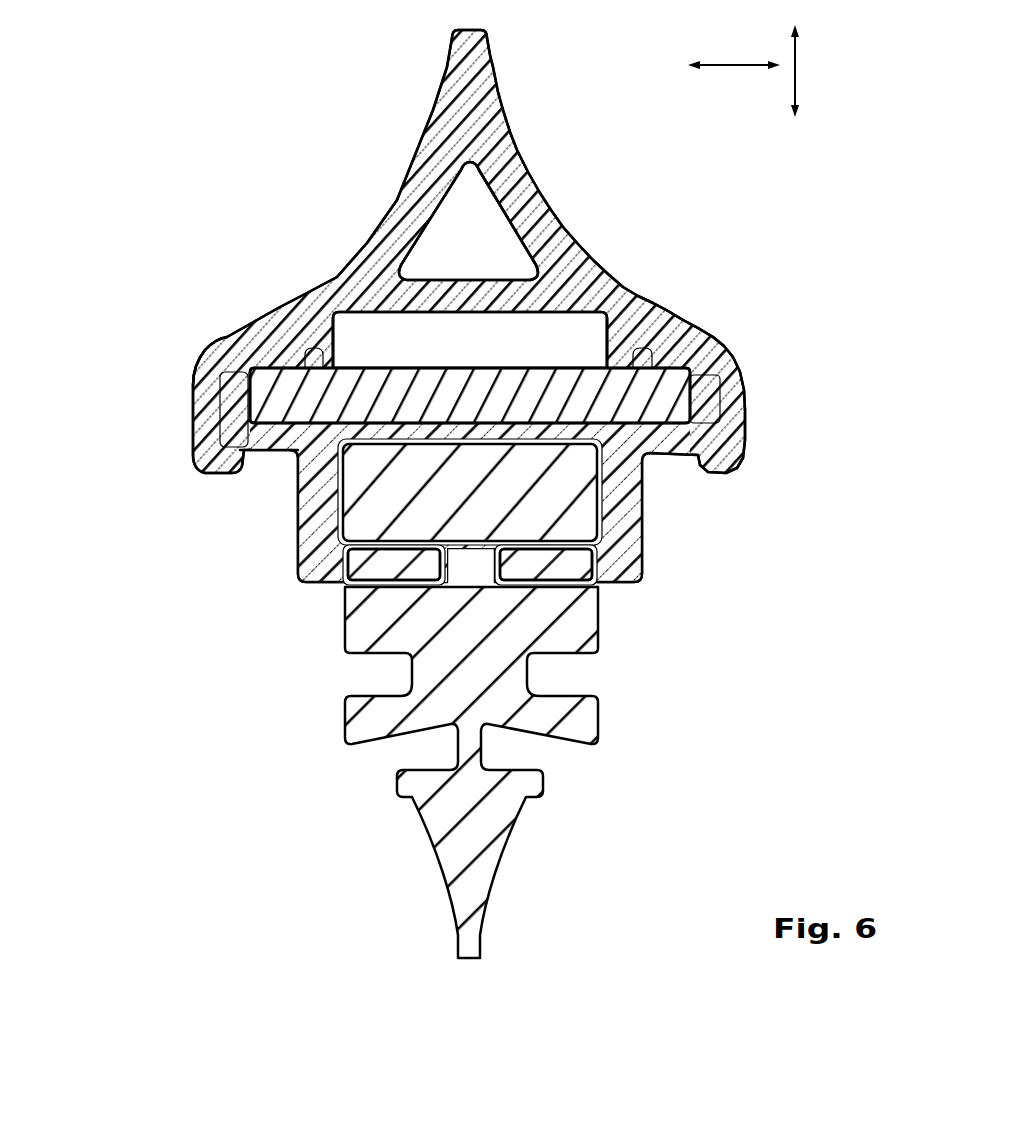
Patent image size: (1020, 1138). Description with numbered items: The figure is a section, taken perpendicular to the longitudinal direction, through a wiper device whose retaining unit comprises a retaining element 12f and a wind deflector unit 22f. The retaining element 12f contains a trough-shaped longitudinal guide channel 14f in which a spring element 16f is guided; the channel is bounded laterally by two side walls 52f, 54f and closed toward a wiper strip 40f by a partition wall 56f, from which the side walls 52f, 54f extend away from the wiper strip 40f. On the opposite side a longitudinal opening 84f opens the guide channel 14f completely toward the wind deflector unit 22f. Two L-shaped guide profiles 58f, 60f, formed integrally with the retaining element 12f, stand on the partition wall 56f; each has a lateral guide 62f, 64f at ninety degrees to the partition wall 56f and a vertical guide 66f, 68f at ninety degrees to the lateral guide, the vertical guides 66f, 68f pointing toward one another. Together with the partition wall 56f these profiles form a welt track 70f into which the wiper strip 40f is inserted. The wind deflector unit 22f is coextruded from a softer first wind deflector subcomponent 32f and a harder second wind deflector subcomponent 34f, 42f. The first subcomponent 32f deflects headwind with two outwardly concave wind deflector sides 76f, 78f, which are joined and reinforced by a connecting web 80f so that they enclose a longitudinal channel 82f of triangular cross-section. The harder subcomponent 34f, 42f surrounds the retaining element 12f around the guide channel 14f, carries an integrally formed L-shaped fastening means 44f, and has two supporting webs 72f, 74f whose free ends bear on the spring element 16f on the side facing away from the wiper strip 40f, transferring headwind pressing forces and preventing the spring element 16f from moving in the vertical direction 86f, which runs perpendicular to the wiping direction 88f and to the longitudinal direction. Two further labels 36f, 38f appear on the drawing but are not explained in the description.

The retaining element 12f is at (228, 410).
The longitudinal guide channel 14f is at (684, 393).
The spring element 16f is at (402, 400).
The wind deflector unit 22f is at (287, 130).
The first wind deflector subcomponent 32f is at (447, 42).
The second wind deflector subcomponent 34f is at (255, 333).
The first flank 36f is at (213, 360).
The second spoiler wing 38f is at (731, 368).
The wiper strip 40f is at (457, 688).
The second wind deflector subcomponent 42f is at (684, 320).
The L-shaped fastening means 44f is at (208, 468).
The side wall 52f is at (233, 443).
The side wall 54f is at (700, 415).
The partition wall 56f is at (533, 425).
The L-shaped guide profile 58f is at (340, 566).
The L-shaped guide profile 60f is at (613, 565).
The lateral guide 62f is at (320, 527).
The lateral guide 64f is at (618, 527).
The vertical guide 66f is at (405, 565).
The vertical guide 68f is at (568, 553).
The welt track 70f is at (692, 490).
The supporting web 72f is at (313, 370).
The supporting web 74f is at (610, 366).
The wind deflector side 76f is at (420, 131).
The wind deflector side 78f is at (520, 124).
The connecting web 80f is at (530, 245).
The longitudinal channel 82f is at (490, 247).
The longitudinal opening 84f is at (486, 353).
The vertical direction 86f is at (797, 70).
The wiping direction 88f is at (733, 63).